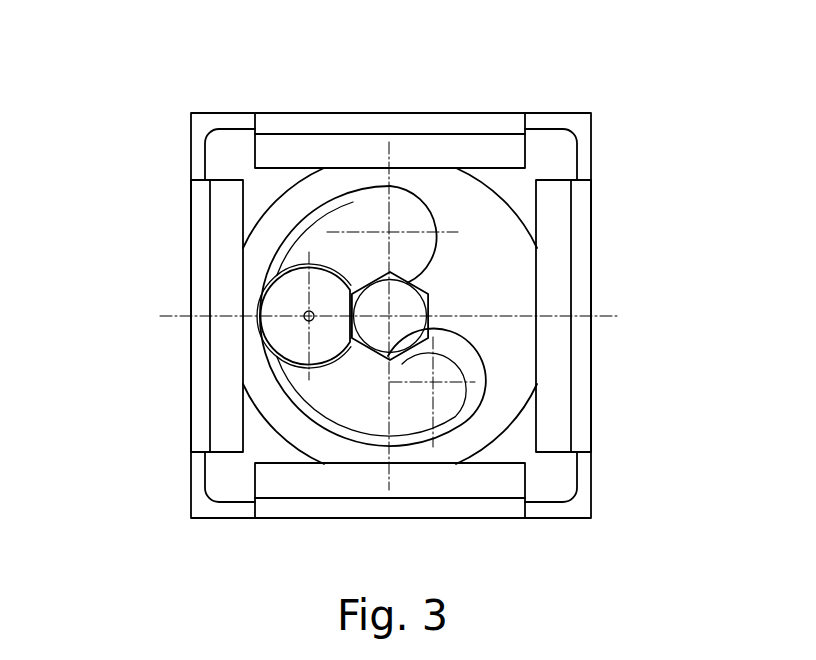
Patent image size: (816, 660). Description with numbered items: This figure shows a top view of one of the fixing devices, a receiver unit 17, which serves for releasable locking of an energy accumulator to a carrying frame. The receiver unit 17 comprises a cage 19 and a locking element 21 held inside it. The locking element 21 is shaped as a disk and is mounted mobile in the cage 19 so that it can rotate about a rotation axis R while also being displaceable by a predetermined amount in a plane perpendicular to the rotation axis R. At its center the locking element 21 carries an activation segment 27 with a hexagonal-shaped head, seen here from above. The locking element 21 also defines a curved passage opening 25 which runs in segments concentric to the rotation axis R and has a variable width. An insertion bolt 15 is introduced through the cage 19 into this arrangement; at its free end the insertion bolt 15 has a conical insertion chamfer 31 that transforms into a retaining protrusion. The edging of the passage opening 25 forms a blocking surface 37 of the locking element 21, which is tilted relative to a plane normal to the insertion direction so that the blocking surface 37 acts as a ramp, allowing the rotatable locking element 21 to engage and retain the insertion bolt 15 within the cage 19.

The receiver unit 17 is at (110, 174).
The cage 19 is at (470, 150).
The locking element 21 is at (498, 240).
The passage opening 25 is at (357, 252).
The activation segment 27 is at (402, 303).
The insertion bolt 15 is at (283, 297).
The insertion chamfer 31 is at (278, 328).
The blocking surface 37 is at (290, 385).
The rotation axis R is at (383, 317).